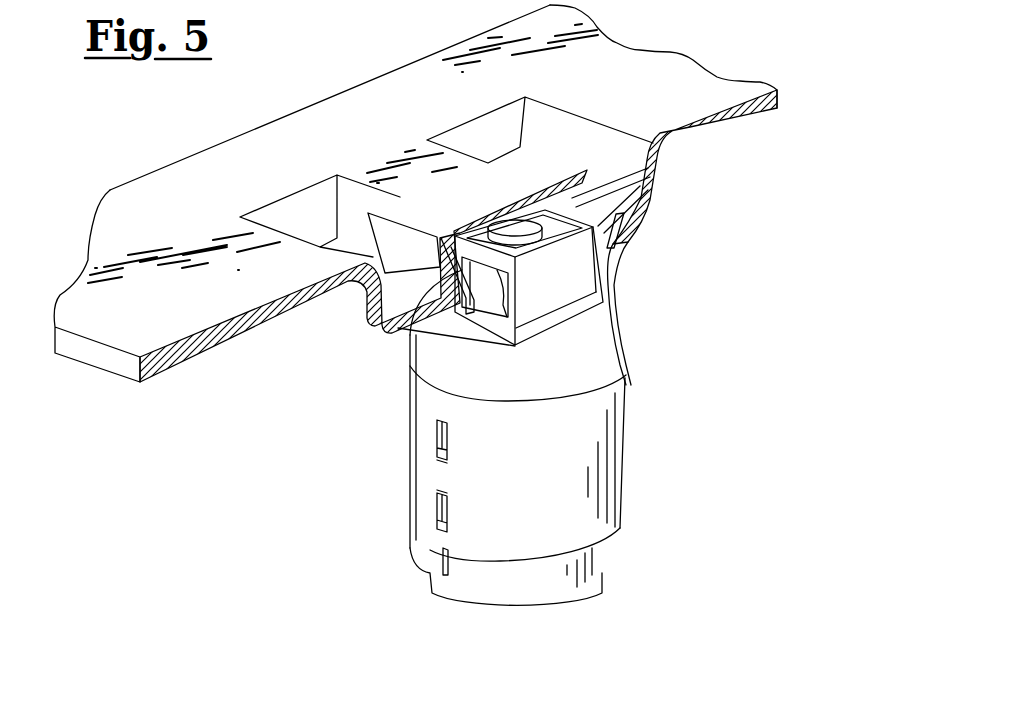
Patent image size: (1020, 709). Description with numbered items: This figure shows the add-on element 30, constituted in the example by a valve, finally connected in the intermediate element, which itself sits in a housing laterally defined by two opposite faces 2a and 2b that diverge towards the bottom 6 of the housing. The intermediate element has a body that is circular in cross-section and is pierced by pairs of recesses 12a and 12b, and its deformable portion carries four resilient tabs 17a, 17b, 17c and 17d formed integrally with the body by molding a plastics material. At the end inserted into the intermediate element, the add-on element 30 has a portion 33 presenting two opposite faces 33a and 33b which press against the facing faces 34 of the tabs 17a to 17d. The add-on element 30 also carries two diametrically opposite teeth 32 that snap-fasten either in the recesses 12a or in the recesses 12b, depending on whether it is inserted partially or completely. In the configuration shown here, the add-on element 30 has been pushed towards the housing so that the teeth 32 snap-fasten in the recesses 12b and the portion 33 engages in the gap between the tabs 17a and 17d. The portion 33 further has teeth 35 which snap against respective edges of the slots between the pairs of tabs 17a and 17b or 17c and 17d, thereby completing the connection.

The face of the housing 2a is at (394, 340).
The face of the housing 2b is at (605, 197).
The bottom of the housing 6 is at (480, 228).
The recesses 12a is at (437, 428).
The recesses 12b is at (437, 505).
The resilient tab 17a is at (620, 248).
The resilient tab 17b is at (619, 222).
The resilient tab 17c is at (492, 315).
The resilient tab 17d is at (325, 195).
The add-on element 30 is at (531, 581).
The teeth 32 is at (436, 448).
The portion of the add-on element 33 is at (609, 325).
The face of the portion 33a is at (540, 270).
The face of the portion 33b is at (604, 248).
The facing faces of the tabs 34 is at (600, 286).
The teeth 35 is at (410, 399).